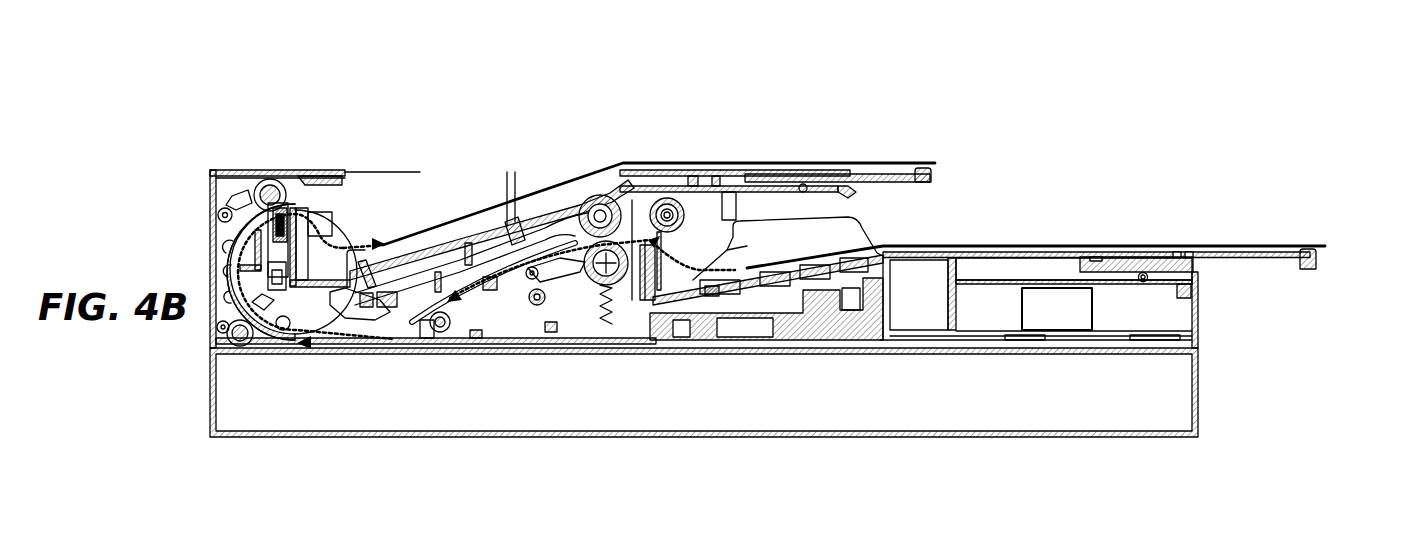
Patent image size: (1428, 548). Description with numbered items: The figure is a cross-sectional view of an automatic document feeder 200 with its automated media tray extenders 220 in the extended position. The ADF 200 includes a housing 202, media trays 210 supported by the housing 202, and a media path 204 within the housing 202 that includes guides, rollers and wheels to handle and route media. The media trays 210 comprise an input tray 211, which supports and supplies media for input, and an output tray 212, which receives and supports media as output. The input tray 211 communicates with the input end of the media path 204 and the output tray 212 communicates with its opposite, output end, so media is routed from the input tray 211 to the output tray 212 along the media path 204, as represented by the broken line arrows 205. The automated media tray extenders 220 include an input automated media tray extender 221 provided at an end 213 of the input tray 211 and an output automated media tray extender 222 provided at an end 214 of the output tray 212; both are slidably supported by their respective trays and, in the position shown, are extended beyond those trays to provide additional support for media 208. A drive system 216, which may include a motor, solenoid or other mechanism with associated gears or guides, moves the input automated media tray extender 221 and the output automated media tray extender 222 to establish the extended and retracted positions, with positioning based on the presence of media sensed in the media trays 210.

The automatic document feeder 200 is at (1280, 51).
The housing 202 is at (259, 170).
The media path 204 is at (648, 288).
The broken line arrows 205 is at (344, 247).
The media 208 is at (856, 163).
The media trays 210 is at (1172, 84).
The input tray 211 is at (1038, 253).
The output tray 212 is at (688, 170).
The end of input tray 213 is at (1198, 317).
The end of output tray 214 is at (855, 196).
The drive system 216 is at (1030, 332).
The automated media tray extenders 220 is at (1233, 130).
The input automated media tray extender 221 is at (1316, 263).
The output automated media tray extender 222 is at (937, 177).